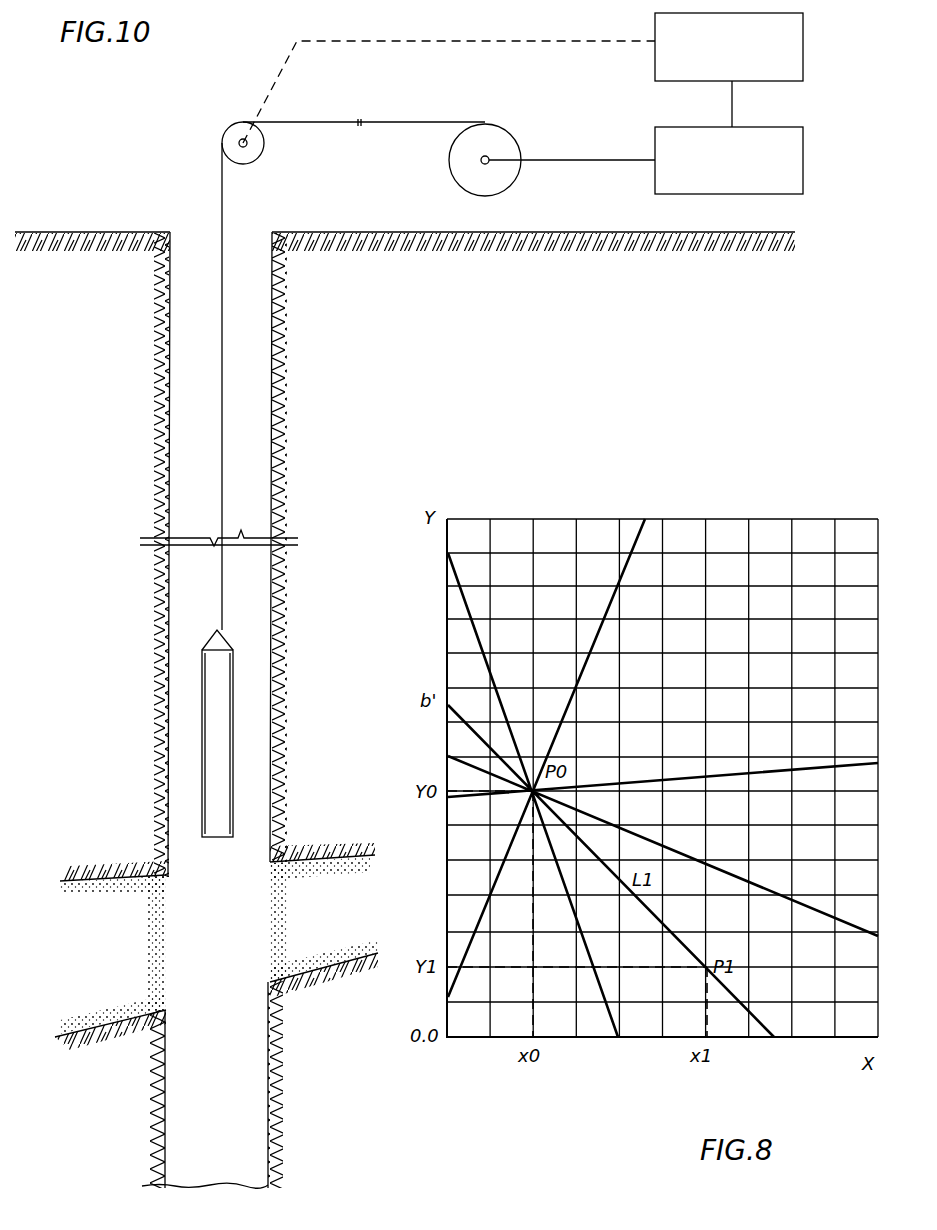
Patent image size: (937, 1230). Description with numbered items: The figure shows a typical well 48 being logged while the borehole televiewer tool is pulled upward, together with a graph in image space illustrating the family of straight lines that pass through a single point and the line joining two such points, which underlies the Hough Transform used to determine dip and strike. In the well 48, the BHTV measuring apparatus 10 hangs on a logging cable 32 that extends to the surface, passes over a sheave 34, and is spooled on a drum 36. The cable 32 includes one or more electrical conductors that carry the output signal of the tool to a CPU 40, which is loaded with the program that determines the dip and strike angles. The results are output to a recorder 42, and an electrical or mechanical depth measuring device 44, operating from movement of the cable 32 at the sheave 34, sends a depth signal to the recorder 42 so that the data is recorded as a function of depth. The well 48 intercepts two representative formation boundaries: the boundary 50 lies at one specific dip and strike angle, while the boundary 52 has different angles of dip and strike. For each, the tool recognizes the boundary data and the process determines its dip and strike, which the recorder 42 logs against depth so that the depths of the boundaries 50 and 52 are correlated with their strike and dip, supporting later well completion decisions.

The borehole logging tool 10 is at (217, 837).
The logging cable 32 is at (222, 438).
The sheave 34 is at (222, 141).
The drum 36 is at (452, 170).
The CPU 40 is at (803, 170).
The recorder 42 is at (803, 56).
The depth measuring device 44 is at (297, 41).
The well 48 is at (278, 310).
The boundary 50 is at (340, 963).
The boundary 52 is at (333, 858).